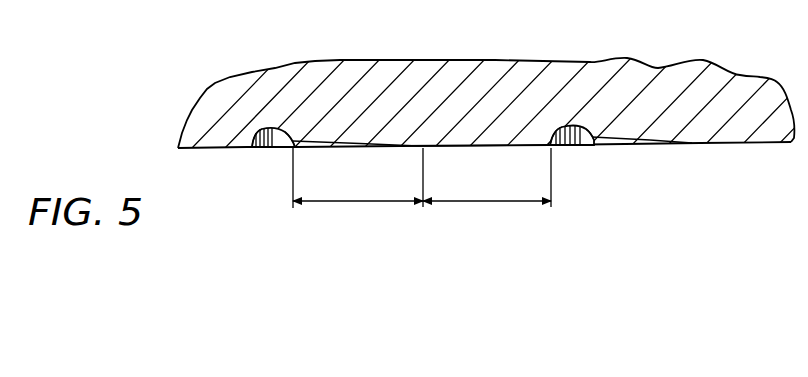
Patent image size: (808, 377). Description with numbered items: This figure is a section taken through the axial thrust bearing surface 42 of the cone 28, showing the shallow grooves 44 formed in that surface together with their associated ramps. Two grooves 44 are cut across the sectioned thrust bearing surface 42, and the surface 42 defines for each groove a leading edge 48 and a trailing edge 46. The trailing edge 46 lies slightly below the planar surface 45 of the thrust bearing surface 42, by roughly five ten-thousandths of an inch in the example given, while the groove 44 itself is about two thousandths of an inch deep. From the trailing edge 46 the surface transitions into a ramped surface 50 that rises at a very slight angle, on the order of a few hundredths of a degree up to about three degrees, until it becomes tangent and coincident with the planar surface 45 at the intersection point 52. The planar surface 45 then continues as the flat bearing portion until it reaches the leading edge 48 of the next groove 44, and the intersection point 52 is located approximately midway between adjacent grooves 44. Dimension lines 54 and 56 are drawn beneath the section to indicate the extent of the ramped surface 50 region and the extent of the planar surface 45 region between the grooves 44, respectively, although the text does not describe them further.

The cone 28 is at (492, 68).
The axial thrust bearing surface 42 is at (763, 145).
The groove 44 is at (275, 148).
The planar surface 45 is at (510, 148).
The trailing edge 46 is at (297, 147).
The leading edge 48 is at (253, 148).
The ramped surface 50 is at (355, 147).
The intersection point 52 is at (428, 149).
The relief length dimension 54 is at (338, 201).
The flat length dimension 56 is at (488, 201).